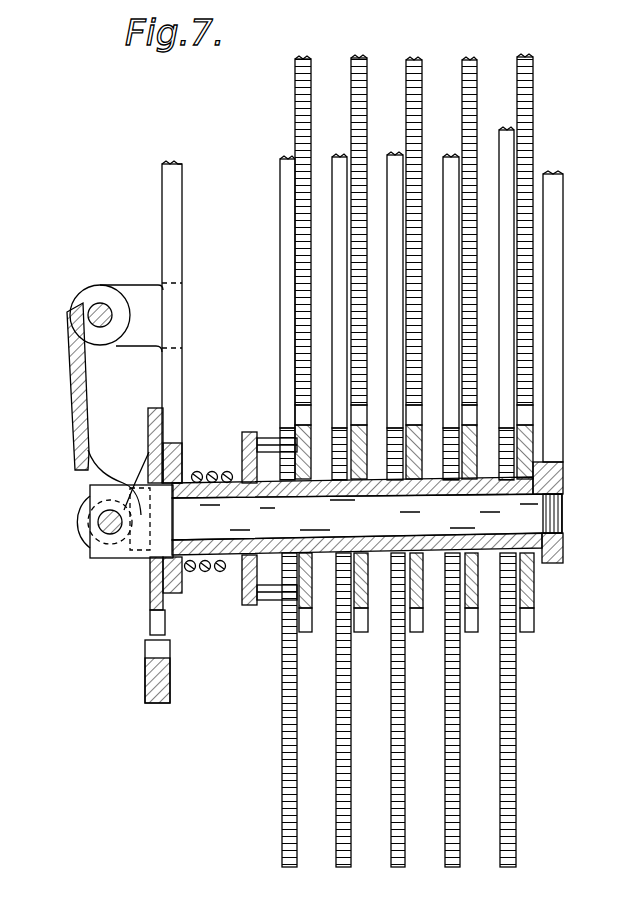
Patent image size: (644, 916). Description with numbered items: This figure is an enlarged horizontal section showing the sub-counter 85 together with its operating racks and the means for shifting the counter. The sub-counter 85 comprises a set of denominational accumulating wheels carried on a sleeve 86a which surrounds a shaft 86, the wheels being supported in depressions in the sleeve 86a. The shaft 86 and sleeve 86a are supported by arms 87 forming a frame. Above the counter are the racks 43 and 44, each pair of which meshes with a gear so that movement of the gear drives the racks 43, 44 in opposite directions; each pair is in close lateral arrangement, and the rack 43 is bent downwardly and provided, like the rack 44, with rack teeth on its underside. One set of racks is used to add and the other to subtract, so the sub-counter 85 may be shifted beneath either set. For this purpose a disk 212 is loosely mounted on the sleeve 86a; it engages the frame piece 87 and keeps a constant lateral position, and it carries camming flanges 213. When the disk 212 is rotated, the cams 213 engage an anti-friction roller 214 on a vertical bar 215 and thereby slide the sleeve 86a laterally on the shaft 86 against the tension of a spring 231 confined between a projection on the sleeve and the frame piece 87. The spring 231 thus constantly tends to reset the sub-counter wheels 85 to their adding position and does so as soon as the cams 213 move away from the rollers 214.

The rack 44 is at (358, 70).
The rack 43 is at (340, 155).
The arm 87 is at (183, 385).
The shaft 86 is at (367, 516).
The sleeve 86a is at (537, 560).
The sub-counter 85 is at (307, 632).
The spring 231 is at (192, 470).
The disk 212 is at (150, 585).
The camming flange 213 is at (135, 483).
The anti-friction roller 214 is at (107, 538).
The vertical bar 215 is at (98, 520).